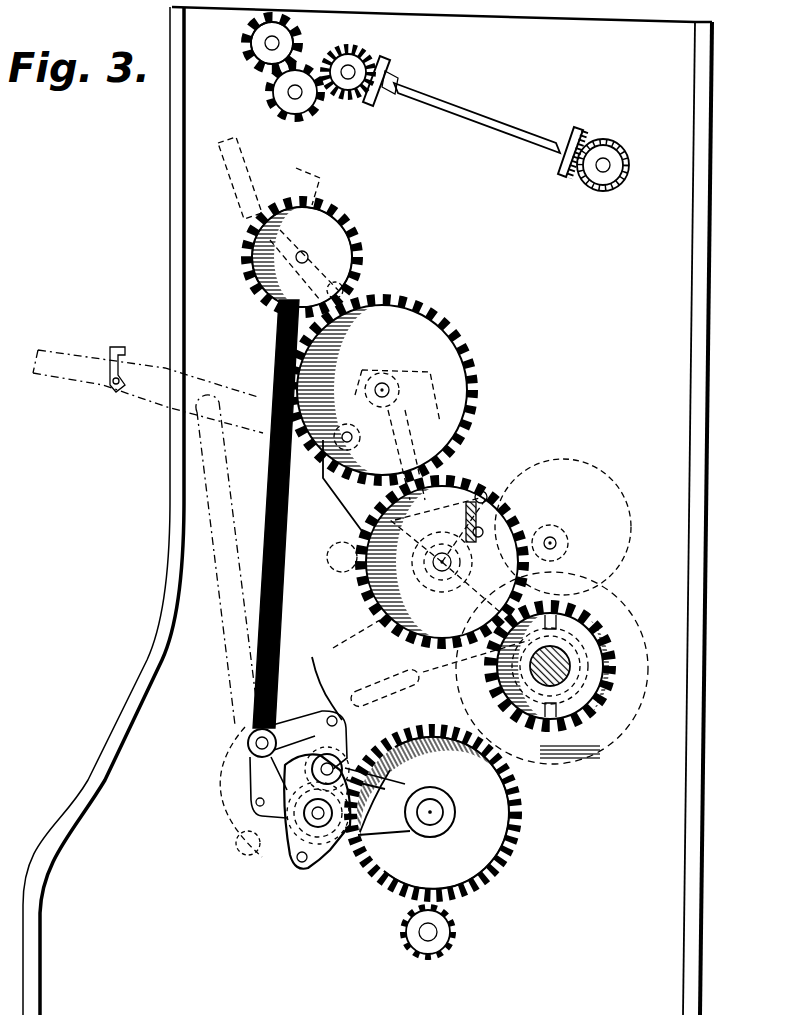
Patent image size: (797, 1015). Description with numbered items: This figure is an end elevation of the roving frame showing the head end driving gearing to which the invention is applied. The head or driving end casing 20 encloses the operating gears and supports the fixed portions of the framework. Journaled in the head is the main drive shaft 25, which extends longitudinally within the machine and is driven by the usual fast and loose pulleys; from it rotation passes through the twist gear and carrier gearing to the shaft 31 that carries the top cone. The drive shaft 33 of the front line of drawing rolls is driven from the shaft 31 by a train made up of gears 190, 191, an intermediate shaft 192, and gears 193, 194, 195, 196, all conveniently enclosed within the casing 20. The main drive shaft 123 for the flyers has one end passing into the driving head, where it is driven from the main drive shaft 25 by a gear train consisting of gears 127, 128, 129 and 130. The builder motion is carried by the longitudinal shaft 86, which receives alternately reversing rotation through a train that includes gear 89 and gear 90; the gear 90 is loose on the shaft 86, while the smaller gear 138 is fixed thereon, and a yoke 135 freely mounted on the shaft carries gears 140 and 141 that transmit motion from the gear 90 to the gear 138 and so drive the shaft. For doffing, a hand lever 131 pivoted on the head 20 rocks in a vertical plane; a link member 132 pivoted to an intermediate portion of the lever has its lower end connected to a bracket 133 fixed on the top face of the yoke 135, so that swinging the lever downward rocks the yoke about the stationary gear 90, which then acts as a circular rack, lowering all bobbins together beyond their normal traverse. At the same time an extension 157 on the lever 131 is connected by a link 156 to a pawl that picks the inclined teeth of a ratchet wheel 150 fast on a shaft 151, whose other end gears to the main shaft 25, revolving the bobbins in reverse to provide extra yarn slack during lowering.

The head or driving end casing 20 is at (708, 353).
The main drive shaft 25 is at (565, 652).
The shaft 31 is at (609, 160).
The drive shaft of the front line of drawing rolls 33 is at (243, 63).
The shaft 86 is at (433, 802).
The gear 89 is at (453, 940).
The gear 90 is at (522, 828).
The main drive shaft for the flyers 123 is at (296, 255).
The gear 127 is at (260, 298).
The gear 128 is at (385, 312).
The gear 129 is at (473, 475).
The gear 130 is at (587, 727).
The hand lever 131 is at (253, 165).
The link member 132 is at (277, 594).
The bracket 133 is at (250, 752).
The yoke 135 is at (292, 853).
The gear 138 is at (521, 860).
The gear 140 is at (348, 637).
The gear 141 is at (318, 870).
The ratchet wheel 150 is at (592, 487).
The shaft 151 is at (560, 537).
The link 156 is at (392, 622).
The extension 157 is at (332, 507).
The gear 190 is at (604, 140).
The gear 191 is at (580, 130).
The shaft 192 is at (447, 107).
The gear 193 is at (388, 68).
The gear 194 is at (384, 60).
The gear 195 is at (268, 99).
The gear 196 is at (250, 72).